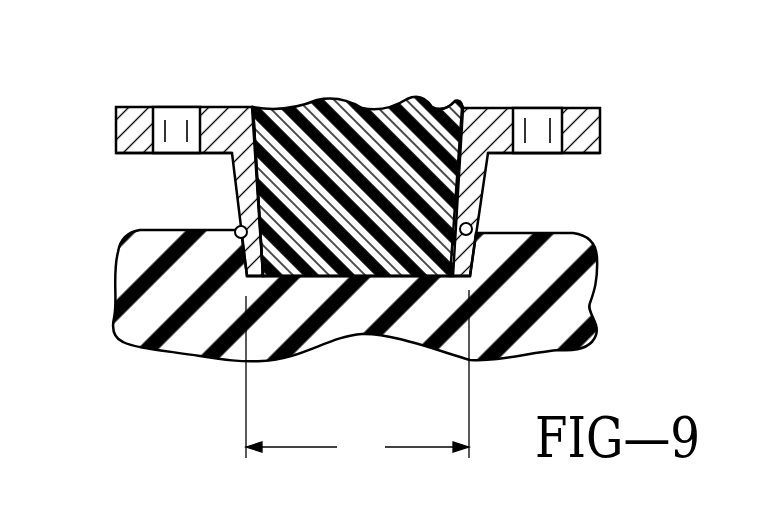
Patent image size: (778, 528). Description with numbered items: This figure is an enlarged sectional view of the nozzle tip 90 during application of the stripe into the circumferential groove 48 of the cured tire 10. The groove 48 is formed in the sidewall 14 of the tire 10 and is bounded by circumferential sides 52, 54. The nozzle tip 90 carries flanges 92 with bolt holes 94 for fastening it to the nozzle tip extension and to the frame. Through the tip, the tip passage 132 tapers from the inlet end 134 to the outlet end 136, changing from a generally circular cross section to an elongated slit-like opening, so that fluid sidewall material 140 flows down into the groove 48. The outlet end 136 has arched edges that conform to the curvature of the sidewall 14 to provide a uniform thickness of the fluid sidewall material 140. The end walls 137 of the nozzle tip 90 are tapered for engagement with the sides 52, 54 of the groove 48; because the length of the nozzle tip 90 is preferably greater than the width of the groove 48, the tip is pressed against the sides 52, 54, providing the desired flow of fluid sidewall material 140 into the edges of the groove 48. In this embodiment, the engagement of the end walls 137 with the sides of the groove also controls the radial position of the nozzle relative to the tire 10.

The cured tire 10 is at (395, 295).
The sidewall 14 is at (590, 307).
The circumferential groove 48 is at (313, 277).
The circumferential side 52 is at (470, 225).
The circumferential side 54 is at (240, 228).
The nozzle tip 90 is at (352, 149).
The flange 92 is at (137, 156).
The bolt hole 94 is at (158, 108).
The tip passage 132 is at (440, 106).
The inlet end 134 is at (263, 107).
The outlet end 136 is at (388, 279).
The end wall 137 is at (247, 198).
The fluid sidewall material 140 is at (359, 149).